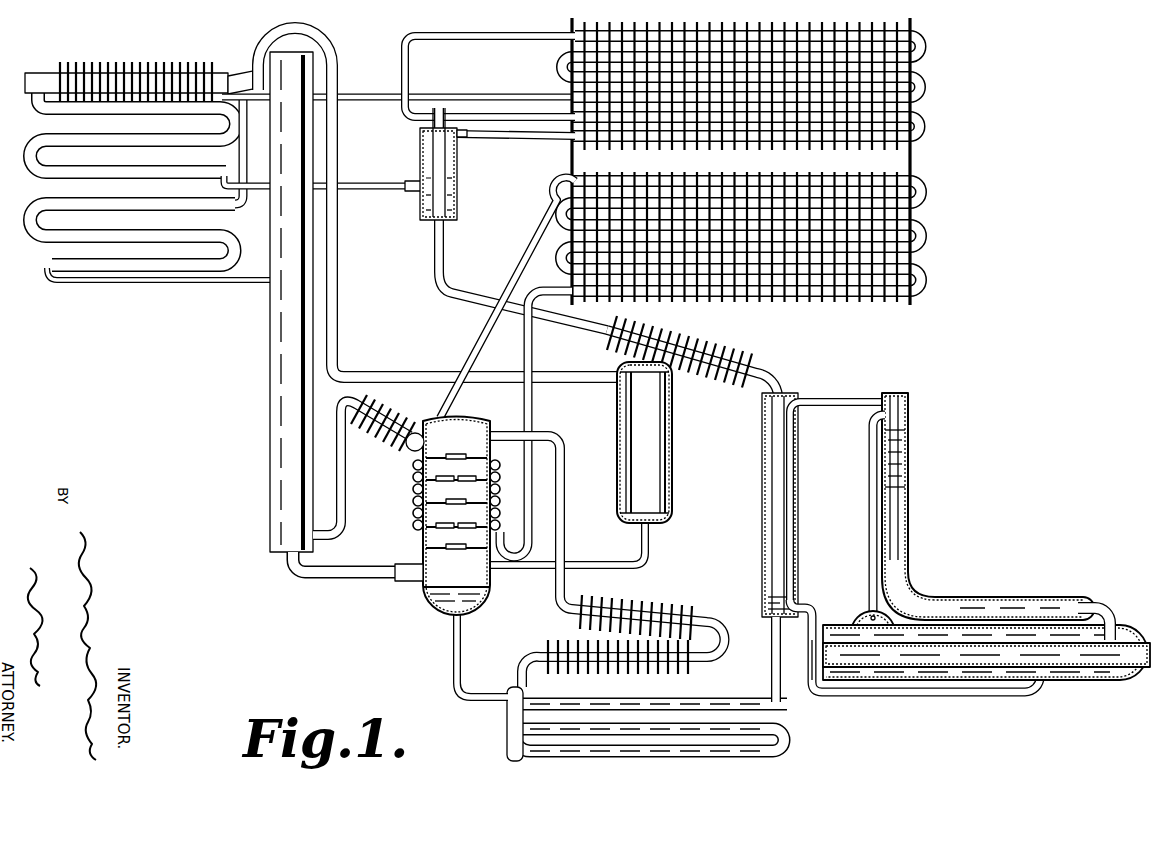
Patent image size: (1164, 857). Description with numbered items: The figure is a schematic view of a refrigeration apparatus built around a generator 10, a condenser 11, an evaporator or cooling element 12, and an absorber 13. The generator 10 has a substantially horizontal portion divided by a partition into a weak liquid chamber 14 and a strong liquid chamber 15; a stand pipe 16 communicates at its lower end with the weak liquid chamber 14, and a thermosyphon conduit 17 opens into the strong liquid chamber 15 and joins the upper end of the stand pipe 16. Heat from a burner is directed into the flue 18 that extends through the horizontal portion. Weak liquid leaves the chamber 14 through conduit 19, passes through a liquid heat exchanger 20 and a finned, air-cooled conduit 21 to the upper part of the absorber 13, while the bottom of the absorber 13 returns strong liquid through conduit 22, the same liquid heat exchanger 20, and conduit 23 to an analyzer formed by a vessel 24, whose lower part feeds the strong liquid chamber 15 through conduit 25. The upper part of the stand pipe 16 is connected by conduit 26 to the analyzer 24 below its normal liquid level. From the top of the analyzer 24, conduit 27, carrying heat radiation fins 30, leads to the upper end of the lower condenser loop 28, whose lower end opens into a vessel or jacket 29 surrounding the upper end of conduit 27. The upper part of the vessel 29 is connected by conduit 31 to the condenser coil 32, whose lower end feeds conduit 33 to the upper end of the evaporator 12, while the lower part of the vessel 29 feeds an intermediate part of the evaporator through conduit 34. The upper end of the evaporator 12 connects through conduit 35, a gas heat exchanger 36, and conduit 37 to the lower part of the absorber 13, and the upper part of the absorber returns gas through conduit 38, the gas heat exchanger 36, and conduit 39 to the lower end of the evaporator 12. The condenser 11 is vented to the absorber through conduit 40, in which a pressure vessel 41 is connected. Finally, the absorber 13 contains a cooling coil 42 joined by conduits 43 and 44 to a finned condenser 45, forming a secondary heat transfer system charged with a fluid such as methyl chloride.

The generator 10 is at (1055, 583).
The condenser 11 is at (763, 161).
The evaporator or cooling element 12 is at (150, 262).
The absorber 13 is at (439, 522).
The weak liquid chamber 14 is at (1128, 676).
The strong liquid chamber 15 is at (866, 615).
The stand pipe 16 is at (906, 549).
The thermosyphon conduit 17 is at (869, 551).
The flue 18 is at (808, 622).
The conduit 19 is at (903, 697).
The liquid heat exchanger 20 is at (774, 740).
The conduit 21 is at (563, 593).
The conduit 22 is at (462, 652).
The conduit 23 is at (770, 662).
The analyzer vessel 24 is at (796, 520).
The conduit 25 is at (812, 665).
The conduit 26 is at (818, 402).
The conduit 27 is at (590, 326).
The lower condenser loop 28 is at (922, 130).
The vessel or jacket 29 is at (458, 170).
The heat radiation fins 30 is at (672, 337).
The conduit 31 is at (410, 73).
The condenser coil 32 is at (922, 50).
The conduit 33 is at (385, 95).
The conduit 34 is at (388, 185).
The conduit 35 is at (240, 70).
The gas heat exchanger 36 is at (272, 298).
The conduit 37 is at (370, 566).
The conduit 38 is at (345, 481).
The conduit 39 is at (239, 141).
The conduit 40 is at (332, 262).
The pressure vessel 41 is at (672, 456).
The cooling coil 42 is at (412, 503).
The conduit 43 is at (533, 393).
The conduit 44 is at (486, 328).
The condenser 45 is at (922, 236).